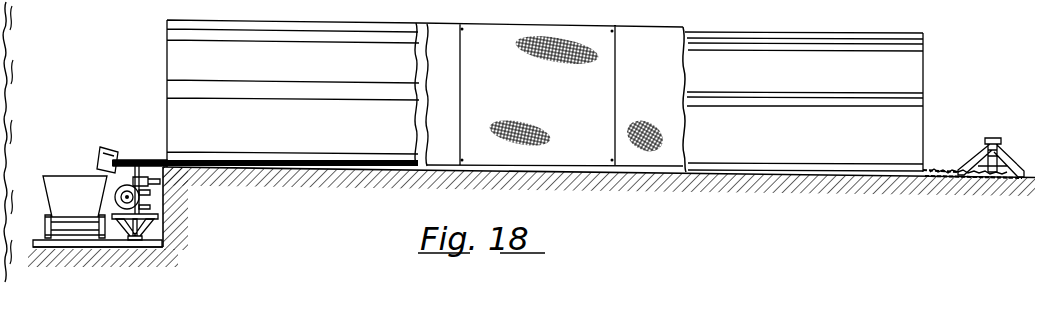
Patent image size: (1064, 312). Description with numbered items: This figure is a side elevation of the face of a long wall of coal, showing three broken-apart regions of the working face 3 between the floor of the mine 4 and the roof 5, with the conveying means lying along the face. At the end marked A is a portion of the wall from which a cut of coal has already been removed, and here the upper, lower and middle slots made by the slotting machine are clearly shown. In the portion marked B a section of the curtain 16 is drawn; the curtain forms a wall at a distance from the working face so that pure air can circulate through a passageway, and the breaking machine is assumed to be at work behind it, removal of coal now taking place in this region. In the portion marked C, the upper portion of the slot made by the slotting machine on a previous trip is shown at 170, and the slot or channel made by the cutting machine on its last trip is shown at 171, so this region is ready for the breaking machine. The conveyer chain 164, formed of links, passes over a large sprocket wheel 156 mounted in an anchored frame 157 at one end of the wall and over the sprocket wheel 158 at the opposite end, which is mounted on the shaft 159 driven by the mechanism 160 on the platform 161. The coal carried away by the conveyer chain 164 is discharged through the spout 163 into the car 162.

The portion of the wall from which a cut of coal has been removed A is at (270, 93).
The curtain region behind which the breaking machine is at work B is at (551, 94).
The portion of the wall cut and slotted ready for the breaking machine C is at (803, 99).
The working face 3 is at (738, 73).
The floor of the mine 4 is at (590, 155).
The roof 5 is at (653, 27).
The curtain member 16 is at (498, 87).
The sprocket wheel 156 is at (986, 182).
The frame 157 is at (1035, 144).
The sprocket wheel 158 is at (143, 159).
The shaft 159 is at (117, 157).
The driving mechanism 160 is at (149, 202).
The platform 161 is at (148, 223).
The car 162 is at (80, 201).
The spout 163 is at (99, 159).
The conveyer chain 164 is at (352, 168).
The upper portion of the slot 170 is at (885, 27).
The slot or channel made by the cutting machine 171 is at (960, 55).